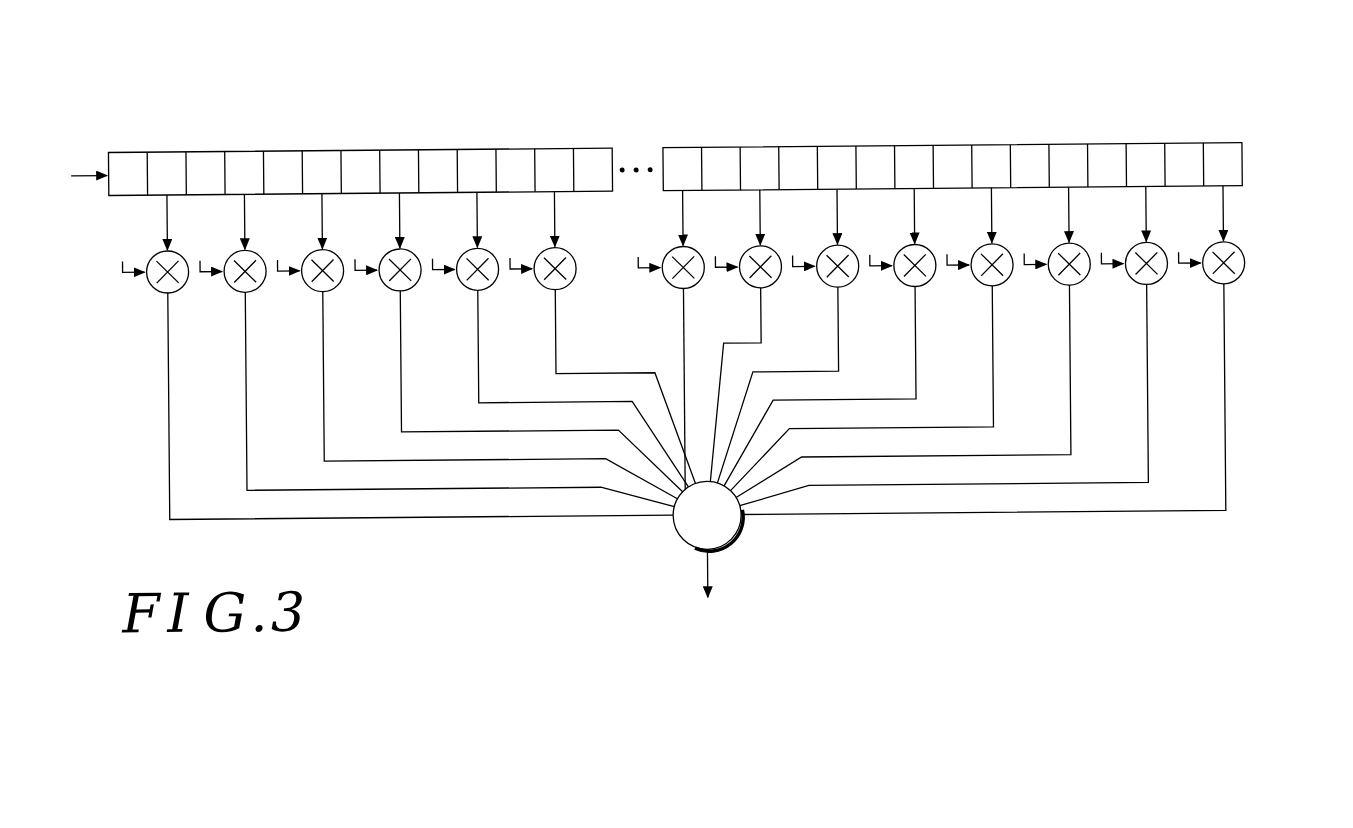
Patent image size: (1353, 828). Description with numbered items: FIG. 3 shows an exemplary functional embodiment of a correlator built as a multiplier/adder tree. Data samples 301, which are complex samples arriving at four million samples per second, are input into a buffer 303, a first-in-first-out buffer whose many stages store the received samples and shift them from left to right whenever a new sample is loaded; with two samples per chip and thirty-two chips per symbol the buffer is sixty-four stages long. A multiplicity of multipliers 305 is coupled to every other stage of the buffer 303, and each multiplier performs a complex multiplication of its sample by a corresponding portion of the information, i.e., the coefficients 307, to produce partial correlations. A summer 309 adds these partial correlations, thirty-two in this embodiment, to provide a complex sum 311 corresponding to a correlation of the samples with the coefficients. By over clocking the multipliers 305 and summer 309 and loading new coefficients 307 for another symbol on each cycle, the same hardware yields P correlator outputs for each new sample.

The data samples 301 is at (83, 113).
The buffer 303 is at (266, 152).
The multipliers 305 is at (1241, 256).
The coefficients 307 is at (1190, 292).
The summer 309 is at (738, 549).
The sum 311 is at (577, 623).